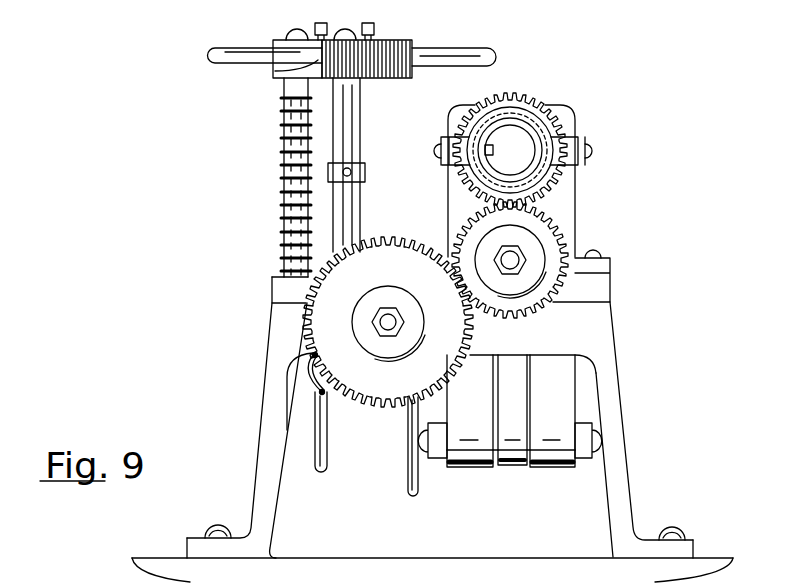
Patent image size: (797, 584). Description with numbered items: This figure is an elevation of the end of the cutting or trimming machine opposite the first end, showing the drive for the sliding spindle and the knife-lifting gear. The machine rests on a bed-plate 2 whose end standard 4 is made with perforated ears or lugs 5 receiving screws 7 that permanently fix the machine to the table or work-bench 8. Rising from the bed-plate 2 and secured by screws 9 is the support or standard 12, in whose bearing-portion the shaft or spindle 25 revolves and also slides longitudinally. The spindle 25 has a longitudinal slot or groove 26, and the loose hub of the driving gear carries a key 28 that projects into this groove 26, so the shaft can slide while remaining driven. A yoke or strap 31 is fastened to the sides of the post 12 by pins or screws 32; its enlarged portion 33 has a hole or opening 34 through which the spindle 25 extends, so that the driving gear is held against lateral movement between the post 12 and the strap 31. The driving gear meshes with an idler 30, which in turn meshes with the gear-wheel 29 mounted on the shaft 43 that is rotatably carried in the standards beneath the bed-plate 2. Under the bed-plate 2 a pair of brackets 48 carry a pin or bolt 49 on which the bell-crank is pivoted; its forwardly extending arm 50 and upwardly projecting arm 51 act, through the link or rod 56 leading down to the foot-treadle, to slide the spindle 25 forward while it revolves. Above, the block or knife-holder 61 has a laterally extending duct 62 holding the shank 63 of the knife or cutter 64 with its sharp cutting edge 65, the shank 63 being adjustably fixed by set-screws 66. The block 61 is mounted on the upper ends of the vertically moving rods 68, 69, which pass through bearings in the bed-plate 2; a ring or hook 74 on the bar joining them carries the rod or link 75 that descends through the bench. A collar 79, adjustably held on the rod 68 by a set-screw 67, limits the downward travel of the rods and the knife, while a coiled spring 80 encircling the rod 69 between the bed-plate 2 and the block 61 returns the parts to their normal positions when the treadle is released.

The bed-plate 2 is at (592, 290).
The support or standard 4 is at (258, 472).
The perforated ears or lugs 5 is at (194, 546).
The screws 7 is at (211, 533).
The table or work-bench 8 is at (588, 325).
The screws 9 is at (600, 252).
The support or standard 12 is at (563, 207).
The shaft or spindle 25 is at (513, 150).
The slot or groove 26 is at (493, 150).
The key 28 is at (449, 137).
The gear-wheel 29 is at (375, 256).
The idler 30 is at (462, 237).
The yoke or strap 31 is at (443, 163).
The pins or screws 32 is at (443, 150).
The enlarged portion 33 is at (533, 177).
The hole or opening 34 is at (536, 140).
The shaft 43 is at (390, 313).
The brackets 48 is at (463, 467).
The pin or bolt 49 is at (587, 438).
The forwardly extending arm 50 is at (515, 465).
The upwardly projecting arm 51 is at (513, 382).
The link or rod 56 is at (410, 479).
The block or knife-holder 61 is at (397, 52).
The duct 62 is at (276, 78).
The shank 63 is at (237, 52).
The knife or cutter 64 is at (465, 50).
The cutting edge 65 is at (455, 66).
The set-screws 66 is at (365, 24).
The set-screw 67 is at (357, 168).
The rod 68 is at (350, 120).
The rod 69 is at (291, 151).
The ring or hook 74 is at (303, 378).
The rod or link 75 is at (322, 440).
The collar 79 is at (360, 174).
The coiled spring 80 is at (288, 158).